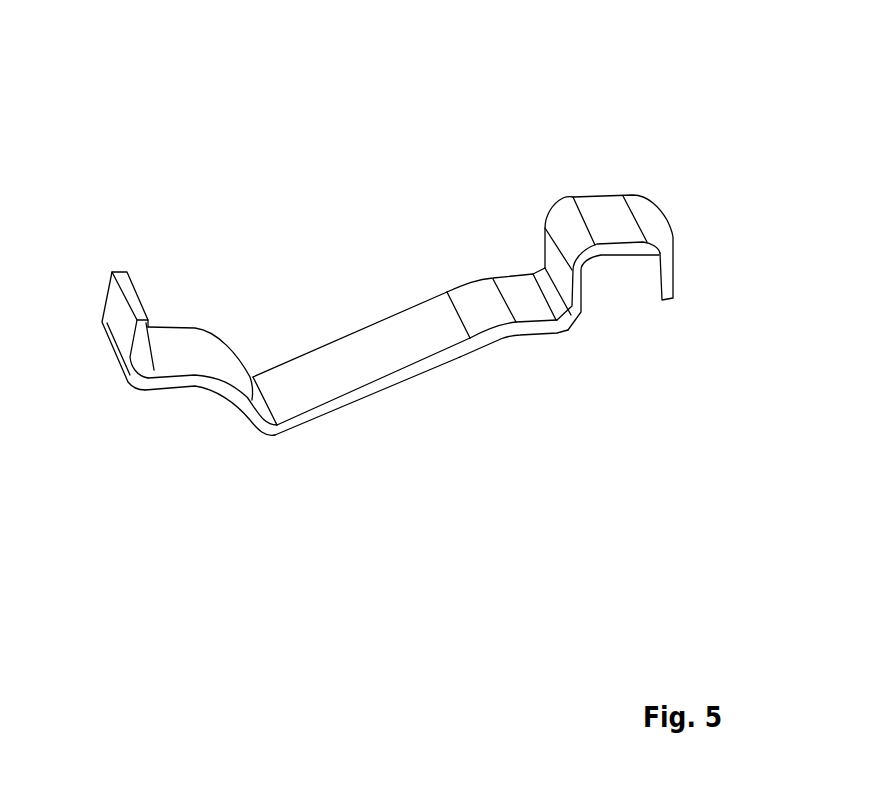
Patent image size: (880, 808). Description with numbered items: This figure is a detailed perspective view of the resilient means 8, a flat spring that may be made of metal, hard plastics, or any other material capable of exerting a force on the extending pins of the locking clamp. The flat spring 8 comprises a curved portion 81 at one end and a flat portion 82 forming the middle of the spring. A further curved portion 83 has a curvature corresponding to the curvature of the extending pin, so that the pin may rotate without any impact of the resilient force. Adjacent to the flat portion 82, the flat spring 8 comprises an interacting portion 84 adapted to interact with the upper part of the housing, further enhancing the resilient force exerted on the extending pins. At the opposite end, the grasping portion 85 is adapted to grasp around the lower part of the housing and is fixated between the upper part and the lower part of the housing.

The resilient means 8 is at (110, 102).
The curved portion 81 is at (188, 332).
The flat portion 82 is at (353, 350).
The curved portion 83 is at (273, 430).
The interacting portion 84 is at (503, 337).
The grasping portion 85 is at (592, 218).